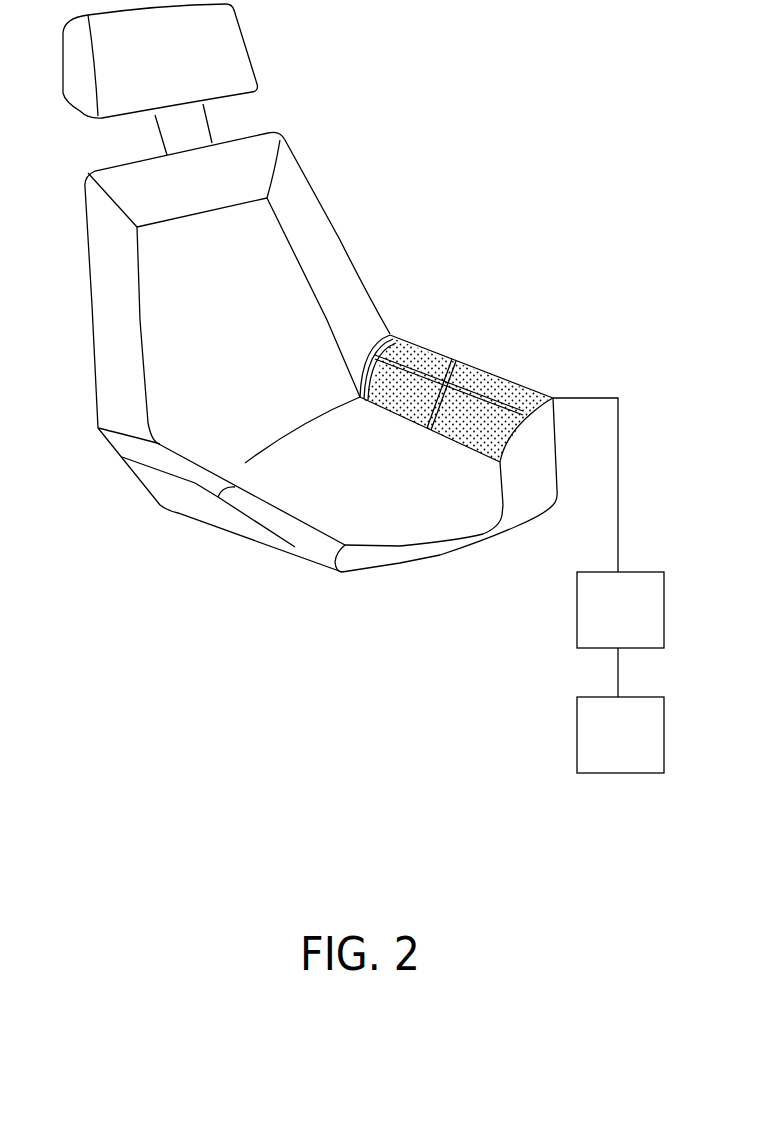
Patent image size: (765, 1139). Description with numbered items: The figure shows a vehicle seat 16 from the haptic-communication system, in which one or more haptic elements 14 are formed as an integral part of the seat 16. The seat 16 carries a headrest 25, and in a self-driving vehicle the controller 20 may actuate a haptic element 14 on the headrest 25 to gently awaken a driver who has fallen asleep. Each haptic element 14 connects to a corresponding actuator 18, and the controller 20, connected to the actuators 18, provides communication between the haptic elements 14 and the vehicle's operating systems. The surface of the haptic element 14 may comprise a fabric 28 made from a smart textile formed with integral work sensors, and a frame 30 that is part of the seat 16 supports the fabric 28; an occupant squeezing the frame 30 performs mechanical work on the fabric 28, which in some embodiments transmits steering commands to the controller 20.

The haptic element 14 is at (483, 378).
The vehicle seat 16 is at (92, 318).
The actuator 18 is at (635, 623).
The controller 20 is at (635, 748).
The headrest 25 is at (248, 52).
The fabric 28 is at (252, 357).
The frame 30 is at (212, 523).